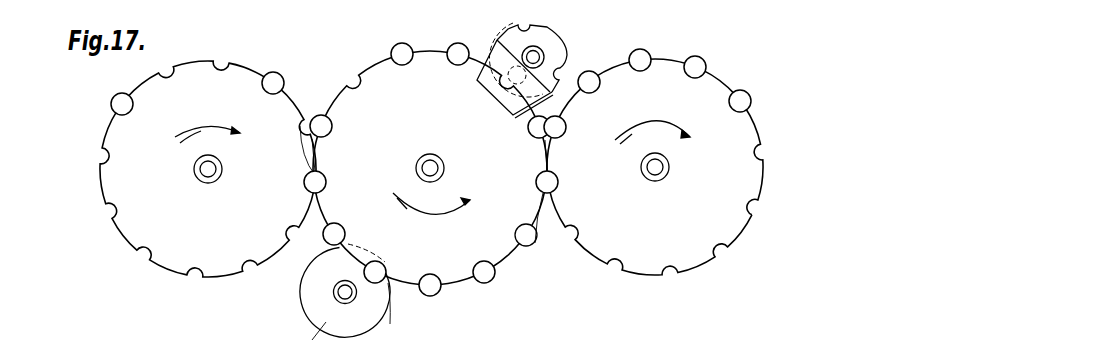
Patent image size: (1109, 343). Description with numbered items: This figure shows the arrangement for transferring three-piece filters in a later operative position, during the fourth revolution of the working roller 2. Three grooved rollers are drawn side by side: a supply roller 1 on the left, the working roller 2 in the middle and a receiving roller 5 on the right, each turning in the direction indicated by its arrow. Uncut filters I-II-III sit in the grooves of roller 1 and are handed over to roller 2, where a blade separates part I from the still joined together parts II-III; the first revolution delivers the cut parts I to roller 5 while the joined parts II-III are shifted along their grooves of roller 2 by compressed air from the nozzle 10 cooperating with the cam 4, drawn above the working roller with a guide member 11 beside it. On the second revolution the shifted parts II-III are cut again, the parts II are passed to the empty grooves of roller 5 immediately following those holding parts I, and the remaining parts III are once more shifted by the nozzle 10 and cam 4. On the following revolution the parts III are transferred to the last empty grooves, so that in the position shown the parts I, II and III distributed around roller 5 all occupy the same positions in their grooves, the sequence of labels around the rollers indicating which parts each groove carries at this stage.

The roller 1 is at (163, 283).
The working roller 2 is at (507, 253).
The cam 4 is at (536, 33).
The roller 5 is at (736, 229).
The nozzle 10 is at (515, 38).
The gate arm 11 is at (514, 106).
The part I of the filter I is at (703, 36).
The part II of the filter II is at (639, 55).
The part III of the filter III is at (396, 342).
The three-piece filter I-II-III is at (532, 313).
The joined together parts II and III II-III is at (602, 29).